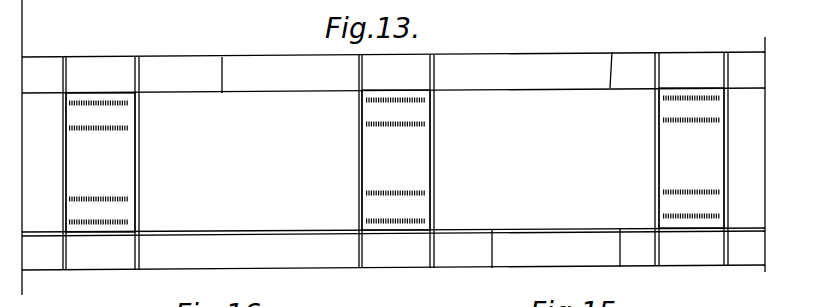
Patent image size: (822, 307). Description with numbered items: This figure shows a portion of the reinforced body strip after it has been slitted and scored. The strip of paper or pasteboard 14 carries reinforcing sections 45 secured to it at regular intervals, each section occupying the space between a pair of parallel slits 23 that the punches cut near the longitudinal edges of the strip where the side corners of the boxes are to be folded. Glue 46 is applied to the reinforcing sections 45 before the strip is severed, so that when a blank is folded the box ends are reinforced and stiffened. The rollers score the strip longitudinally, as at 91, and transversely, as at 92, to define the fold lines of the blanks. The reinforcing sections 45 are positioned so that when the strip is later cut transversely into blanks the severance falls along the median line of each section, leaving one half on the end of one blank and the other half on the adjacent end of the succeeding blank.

The strip of paper or pasteboard 14 is at (578, 36).
The slits 23 is at (407, 88).
The reinforcing sections 45 is at (126, 170).
The glue 46 is at (110, 128).
The longitudinal scoring 91 is at (222, 57).
The transverse scoring 92 is at (140, 128).